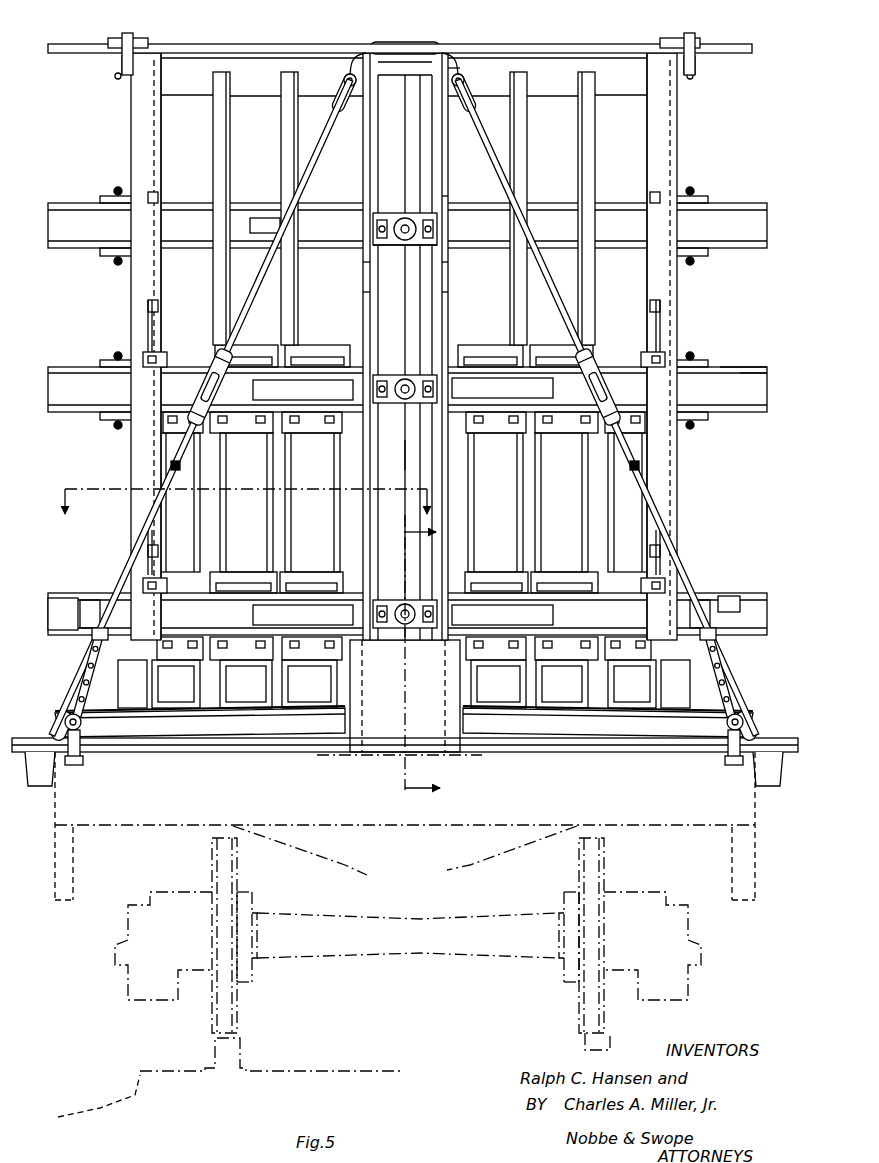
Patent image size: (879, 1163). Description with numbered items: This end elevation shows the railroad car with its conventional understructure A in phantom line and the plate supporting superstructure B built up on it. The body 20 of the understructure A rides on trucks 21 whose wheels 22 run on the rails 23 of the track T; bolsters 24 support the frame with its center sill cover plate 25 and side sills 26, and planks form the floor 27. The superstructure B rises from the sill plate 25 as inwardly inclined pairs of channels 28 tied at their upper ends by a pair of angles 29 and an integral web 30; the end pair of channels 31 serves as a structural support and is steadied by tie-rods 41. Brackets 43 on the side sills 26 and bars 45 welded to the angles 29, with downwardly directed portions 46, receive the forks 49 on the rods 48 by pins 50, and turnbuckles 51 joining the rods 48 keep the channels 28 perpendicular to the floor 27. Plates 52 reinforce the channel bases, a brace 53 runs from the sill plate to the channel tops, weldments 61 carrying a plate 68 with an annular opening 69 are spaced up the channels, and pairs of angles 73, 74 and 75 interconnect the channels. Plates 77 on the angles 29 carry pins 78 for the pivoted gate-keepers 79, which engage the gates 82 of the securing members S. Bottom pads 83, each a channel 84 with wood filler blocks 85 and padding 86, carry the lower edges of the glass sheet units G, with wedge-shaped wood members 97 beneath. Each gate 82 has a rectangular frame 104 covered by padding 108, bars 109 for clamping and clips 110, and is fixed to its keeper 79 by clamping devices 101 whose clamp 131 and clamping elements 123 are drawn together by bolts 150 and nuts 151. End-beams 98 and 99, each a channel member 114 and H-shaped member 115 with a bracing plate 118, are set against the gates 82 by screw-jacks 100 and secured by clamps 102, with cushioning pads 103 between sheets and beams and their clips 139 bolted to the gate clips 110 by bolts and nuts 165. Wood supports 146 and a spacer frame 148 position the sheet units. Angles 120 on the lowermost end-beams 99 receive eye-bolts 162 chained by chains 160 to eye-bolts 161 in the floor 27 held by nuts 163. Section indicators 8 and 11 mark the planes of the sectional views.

The body 20 is at (88, 800).
The trucks 21 is at (137, 943).
The wheels 22 is at (225, 1009).
The rails 23 is at (216, 1040).
The bolsters 24 is at (482, 840).
The center sill cover plate 25 is at (373, 757).
The side sills 26 is at (64, 856).
The floor 27 is at (622, 745).
The pairs of channels 28 is at (362, 291).
The angles 29 is at (346, 72).
The web 30 is at (394, 68).
The pair of channels 31 is at (446, 198).
The tie-rods 41 is at (170, 466).
The brackets 43 is at (38, 778).
The bars 45 is at (399, 56).
The downwardly directed portions 46 is at (462, 70).
The rods 48 is at (316, 154).
The forks 49 is at (340, 105).
The pins 50 is at (343, 81).
The turnbuckles 51 is at (200, 388).
The plates 52 is at (452, 688).
The brace 53 is at (414, 456).
The weldments 61 is at (393, 200).
The plate 68 is at (403, 242).
The annular opening 69 is at (398, 262).
The pair of angles 73 is at (362, 264).
The pair of angles 74 is at (348, 425).
The pair of angles 75 is at (340, 661).
The plates 77 is at (437, 48).
The pins 78 is at (386, 45).
The gate-keepers 79 is at (224, 47).
The gates 82 is at (150, 137).
The bottom pads 83 is at (90, 692).
The channel 84 is at (272, 726).
The wood filler blocks 85 is at (178, 714).
The padding 86 is at (205, 710).
The wedge-shaped members 97 is at (157, 733).
The end-beam 98 is at (78, 228).
The end-beam 99 is at (72, 600).
The screw-jacks 100 is at (402, 402).
The clamping devices 101 is at (108, 40).
The clamping devices 102 is at (117, 187).
The cushioning pads 103 is at (248, 352).
The rectangular frame 104 is at (147, 107).
The padding 108 is at (163, 152).
The bars 109 is at (130, 306).
The clips 110 is at (158, 197).
The channel member 114 is at (726, 366).
The H-shaped member 115 is at (742, 376).
The bracing plate 118 is at (530, 389).
The angles 120 is at (112, 612).
The clamping elements 123 is at (120, 68).
The clamp 131 is at (140, 44).
The clip 139 is at (155, 350).
The supports 146 is at (352, 508).
The spacer frame 148 is at (278, 464).
The bolts 150 is at (126, 75).
The nuts 151 is at (700, 78).
The chains 160 is at (88, 668).
The eye-bolts 161 is at (84, 730).
The eye-bolts 162 is at (60, 620).
The nuts 163 is at (80, 762).
The bolts and nuts 165 is at (160, 362).
The section line 8 is at (444, 557).
The section line 11 is at (88, 535).
The understructure A is at (142, 830).
The superstructure B is at (380, 66).
The glass sheets G is at (174, 264).
The securing members S is at (398, 373).
The track T is at (234, 1051).